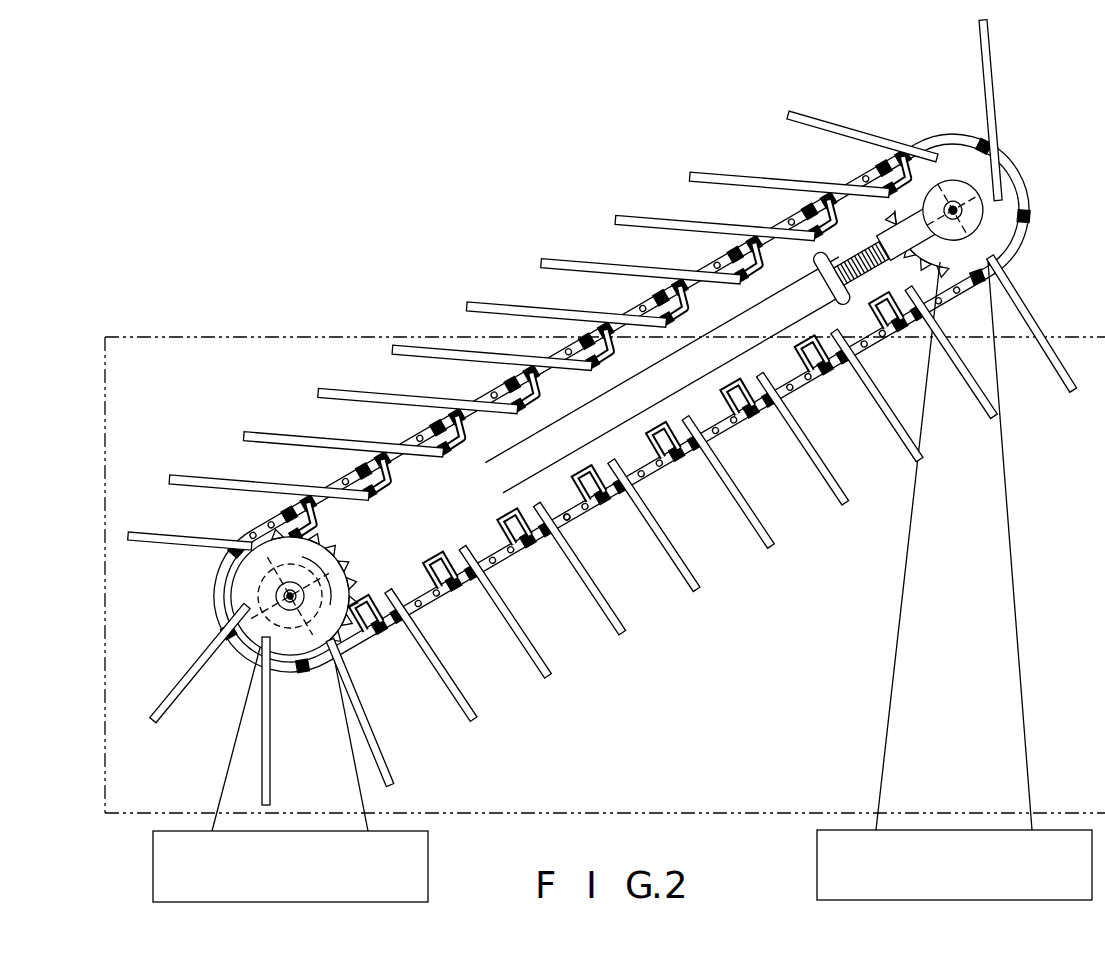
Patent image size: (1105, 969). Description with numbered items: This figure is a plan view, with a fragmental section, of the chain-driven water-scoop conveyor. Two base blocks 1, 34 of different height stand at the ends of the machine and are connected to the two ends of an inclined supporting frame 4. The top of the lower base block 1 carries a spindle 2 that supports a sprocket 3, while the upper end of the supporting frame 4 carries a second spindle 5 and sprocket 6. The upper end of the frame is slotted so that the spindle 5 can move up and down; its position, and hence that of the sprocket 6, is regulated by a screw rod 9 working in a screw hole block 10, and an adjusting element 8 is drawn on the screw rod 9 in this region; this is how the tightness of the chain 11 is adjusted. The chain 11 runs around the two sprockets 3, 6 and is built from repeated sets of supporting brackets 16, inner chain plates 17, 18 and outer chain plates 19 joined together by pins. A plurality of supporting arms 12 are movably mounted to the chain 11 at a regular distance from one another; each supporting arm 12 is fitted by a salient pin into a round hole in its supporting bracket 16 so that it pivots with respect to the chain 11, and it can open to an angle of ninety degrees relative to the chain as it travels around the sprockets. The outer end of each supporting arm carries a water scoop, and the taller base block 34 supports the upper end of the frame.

The base block 1 is at (362, 805).
The spindle 2 is at (283, 597).
The sprocket 3 is at (338, 645).
The supporting frame 4 is at (714, 356).
The spindle 5 is at (1020, 228).
The sprocket 6 is at (985, 172).
The tension adjusting nut 8 is at (845, 302).
The screw rod 9 is at (813, 196).
The screw hole block 10 is at (897, 287).
The chain 11 is at (803, 393).
The supporting arm 12 is at (1052, 362).
The supporting bracket 16 is at (850, 196).
The inner chain plate 17 is at (597, 507).
The inner chain plate 18 is at (568, 523).
The outer chain plate 19 is at (578, 505).
The base block 34 is at (890, 727).